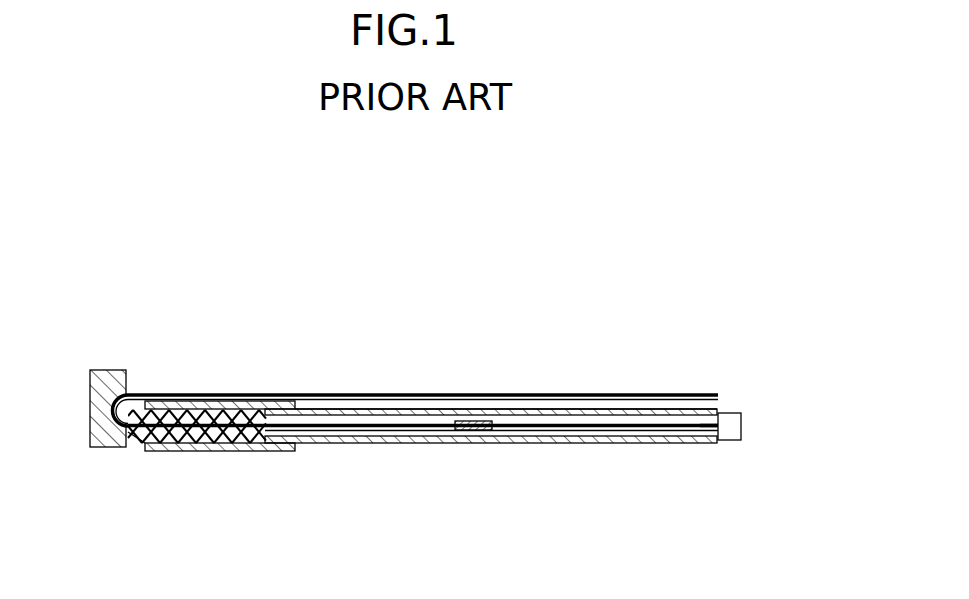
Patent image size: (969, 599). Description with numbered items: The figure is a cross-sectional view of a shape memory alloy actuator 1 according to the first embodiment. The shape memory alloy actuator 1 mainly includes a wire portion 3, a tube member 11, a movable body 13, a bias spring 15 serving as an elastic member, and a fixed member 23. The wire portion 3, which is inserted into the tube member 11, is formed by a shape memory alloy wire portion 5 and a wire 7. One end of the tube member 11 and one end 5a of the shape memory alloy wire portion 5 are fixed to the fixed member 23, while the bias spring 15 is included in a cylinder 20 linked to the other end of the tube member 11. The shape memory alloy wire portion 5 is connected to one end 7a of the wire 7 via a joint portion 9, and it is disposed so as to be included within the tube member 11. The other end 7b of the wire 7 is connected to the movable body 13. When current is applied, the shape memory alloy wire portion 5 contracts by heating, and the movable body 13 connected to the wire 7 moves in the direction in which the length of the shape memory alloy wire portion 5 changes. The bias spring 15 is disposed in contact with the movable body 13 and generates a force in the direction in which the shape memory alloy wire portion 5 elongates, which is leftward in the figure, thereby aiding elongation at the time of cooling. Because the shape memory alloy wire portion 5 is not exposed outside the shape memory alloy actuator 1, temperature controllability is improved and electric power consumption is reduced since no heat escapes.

The shape memory alloy actuator 1 is at (623, 328).
The wire portion 3 is at (553, 522).
The shape memory alloy wire portion 5 is at (542, 428).
The one end of the shape memory alloy wire portion 5a is at (712, 430).
The wire 7 is at (413, 432).
The one end of the wire 7a is at (377, 416).
The other end of the wire 7b is at (140, 393).
The joint portion 9 is at (476, 420).
The tube member 11 is at (572, 406).
The movable body 13 is at (107, 370).
The bias spring 15 is at (134, 434).
The cylinder 20 is at (209, 401).
The fixed member 23 is at (732, 420).